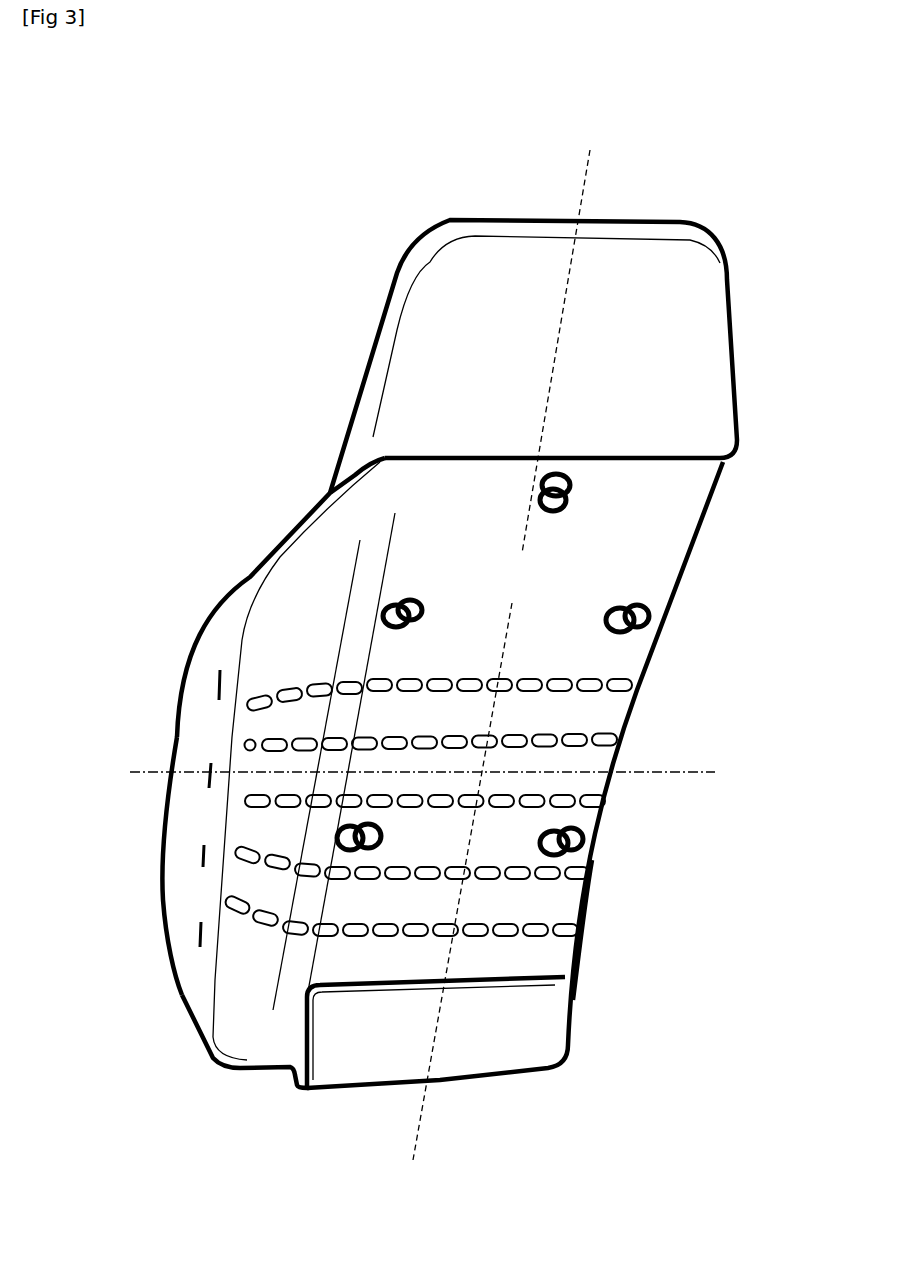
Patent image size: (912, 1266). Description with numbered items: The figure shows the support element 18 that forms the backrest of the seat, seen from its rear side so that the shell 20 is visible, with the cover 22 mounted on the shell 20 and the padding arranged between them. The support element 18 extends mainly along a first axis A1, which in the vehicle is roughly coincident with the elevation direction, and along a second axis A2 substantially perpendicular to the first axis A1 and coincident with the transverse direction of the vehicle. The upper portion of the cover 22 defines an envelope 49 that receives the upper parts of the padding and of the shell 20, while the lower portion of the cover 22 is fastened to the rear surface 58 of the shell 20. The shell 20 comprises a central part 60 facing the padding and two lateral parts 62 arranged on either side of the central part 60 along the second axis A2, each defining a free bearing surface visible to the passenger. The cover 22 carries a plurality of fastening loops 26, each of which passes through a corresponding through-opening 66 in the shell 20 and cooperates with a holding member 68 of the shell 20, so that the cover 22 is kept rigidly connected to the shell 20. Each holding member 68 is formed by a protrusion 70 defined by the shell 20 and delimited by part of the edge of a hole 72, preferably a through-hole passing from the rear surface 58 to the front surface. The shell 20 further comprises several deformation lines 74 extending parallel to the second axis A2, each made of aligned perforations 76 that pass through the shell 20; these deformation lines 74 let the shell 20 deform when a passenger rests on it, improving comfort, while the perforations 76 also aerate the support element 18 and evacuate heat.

The support element 18 is at (688, 213).
The cover 22 is at (737, 353).
The shell 20 is at (687, 560).
The envelope 49 is at (660, 462).
The through-opening 66 is at (575, 486).
The holding member 68 is at (657, 623).
The fastening loop 26 is at (350, 815).
The rear surface 58 is at (527, 598).
The lateral part 62 is at (183, 898).
The central part 60 is at (265, 1027).
The protrusion 70 is at (337, 835).
The hole 72 is at (387, 845).
The deformation line 74 is at (587, 893).
The perforation 76 is at (507, 932).
The first axis A1 is at (416, 1179).
The second axis A2 is at (438, 773).